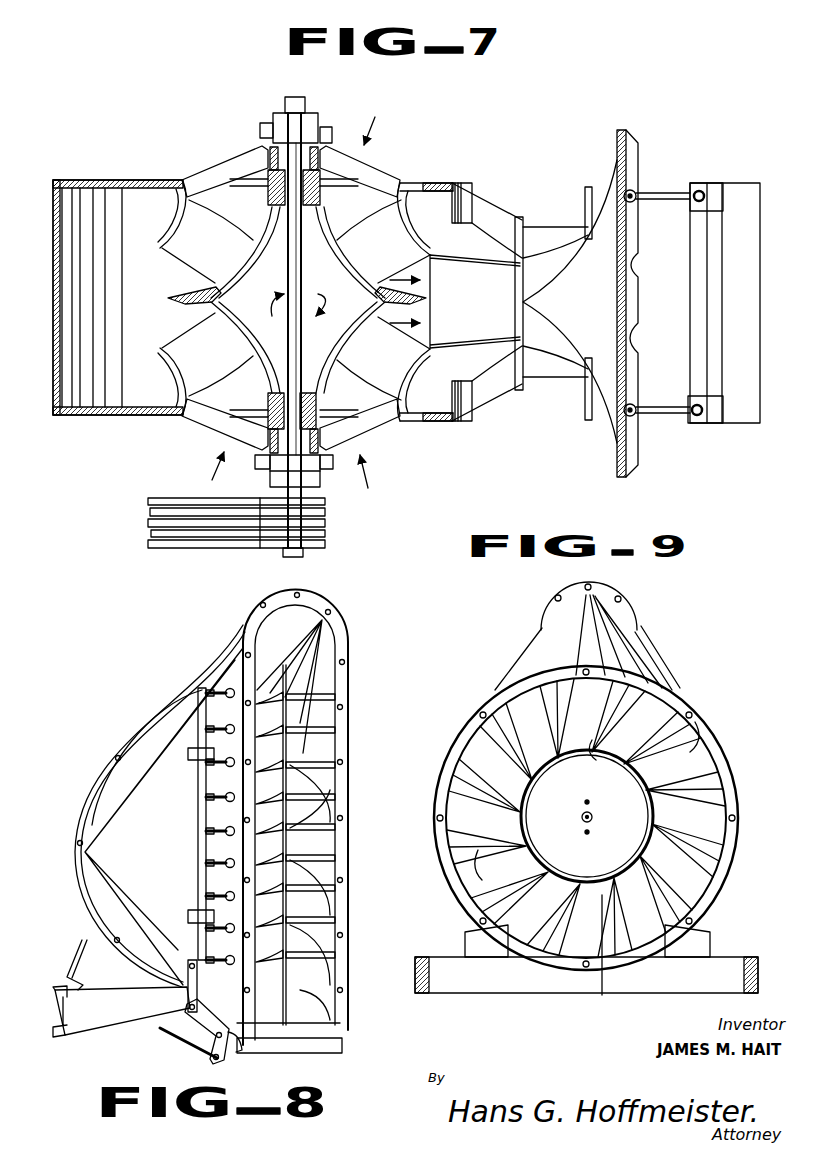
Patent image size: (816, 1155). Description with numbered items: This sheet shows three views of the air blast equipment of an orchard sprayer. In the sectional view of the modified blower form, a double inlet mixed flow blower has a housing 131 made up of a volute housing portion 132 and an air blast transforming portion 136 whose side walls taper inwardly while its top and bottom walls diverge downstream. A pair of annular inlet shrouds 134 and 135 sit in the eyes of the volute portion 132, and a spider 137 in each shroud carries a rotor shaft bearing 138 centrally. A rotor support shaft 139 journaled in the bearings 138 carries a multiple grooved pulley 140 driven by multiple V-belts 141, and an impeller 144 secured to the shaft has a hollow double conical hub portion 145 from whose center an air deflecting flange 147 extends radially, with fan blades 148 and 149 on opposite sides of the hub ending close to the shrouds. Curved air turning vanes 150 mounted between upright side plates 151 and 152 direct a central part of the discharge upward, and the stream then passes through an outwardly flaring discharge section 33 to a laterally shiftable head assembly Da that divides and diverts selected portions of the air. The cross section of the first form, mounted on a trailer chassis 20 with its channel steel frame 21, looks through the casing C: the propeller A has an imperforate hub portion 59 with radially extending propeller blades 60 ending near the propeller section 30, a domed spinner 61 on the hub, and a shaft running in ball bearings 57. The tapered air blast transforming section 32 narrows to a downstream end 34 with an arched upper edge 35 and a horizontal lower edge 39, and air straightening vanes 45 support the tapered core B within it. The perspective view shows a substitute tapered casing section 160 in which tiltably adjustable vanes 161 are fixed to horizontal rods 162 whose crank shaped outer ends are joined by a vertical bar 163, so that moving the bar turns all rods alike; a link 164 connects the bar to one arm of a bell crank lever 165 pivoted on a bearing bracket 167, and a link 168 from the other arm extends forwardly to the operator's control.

In FIG. 7, the blower housing 131 is at (92, 181).
In FIG. 7, the volute housing portion 132 is at (165, 333).
In FIG. 7, the annular inlet shroud 134 is at (401, 178).
In FIG. 7, the annular inlet shroud 135 is at (192, 416).
In FIG. 7, the air blast transforming portion 136 is at (481, 212).
In FIG. 7, the spider 137 is at (232, 170).
In FIG. 7, the rotor shaft bearing 138 is at (276, 116).
In FIG. 7, the rotor support shaft 139 is at (285, 294).
In FIG. 7, the multiple grooved pulley 140 is at (305, 556).
In FIG. 7, the multiple V-belts 141 is at (190, 514).
In FIG. 7, the impeller 144 is at (208, 283).
In FIG. 7, the double conical hub portion 145 is at (343, 237).
In FIG. 7, the air deflecting flange 147 is at (412, 293).
In FIG. 7, the fan blades 148 is at (222, 255).
In FIG. 7, the fan blades 149 is at (221, 366).
In FIG. 7, the curved air turning vanes 150 is at (492, 325).
In FIG. 7, the upright side plate 151 is at (481, 260).
In FIG. 7, the upright side plate 152 is at (462, 352).
In FIG. 7, the outwardly flaring discharge section 33 is at (578, 230).
In FIG. 7, the laterally shiftable head assembly Da is at (590, 308).
In FIG. 9, the propeller section 30 is at (712, 743).
In FIG. 9, the tapered air blast transforming section 32 is at (560, 646).
In FIG. 9, the downstream end 34 is at (628, 601).
In FIG. 9, the arched upper edge 35 is at (583, 595).
In FIG. 9, the horizontal lower edge 39 is at (596, 960).
In FIG. 9, the air straightening vanes 45 is at (650, 695).
In FIG. 9, the ball bearing 57 is at (594, 818).
In FIG. 9, the imperforate hub portion 59 is at (606, 875).
In FIG. 9, the propeller blades 60 is at (584, 750).
In FIG. 9, the domed spinner 61 is at (640, 790).
In FIG. 9, the trailer chassis 20 is at (428, 952).
In FIG. 9, the channel steel frame 21 is at (748, 982).
In FIG. 9, the propeller A is at (568, 790).
In FIG. 9, the tapered core B is at (576, 726).
In FIG. 8, the tapered core B is at (274, 990).
In FIG. 9, the casing C is at (645, 647).
In FIG. 8, the tapered casing section 160 is at (165, 848).
In FIG. 8, the tiltably adjustable vanes 161 is at (330, 735).
In FIG. 8, the horizontal rods 162 is at (222, 727).
In FIG. 8, the vertical bar 163 is at (198, 785).
In FIG. 8, the link 164 is at (188, 998).
In FIG. 8, the bell crank lever 165 is at (225, 1060).
In FIG. 8, the bearing bracket 167 is at (244, 1046).
In FIG. 8, the link 168 is at (187, 1047).